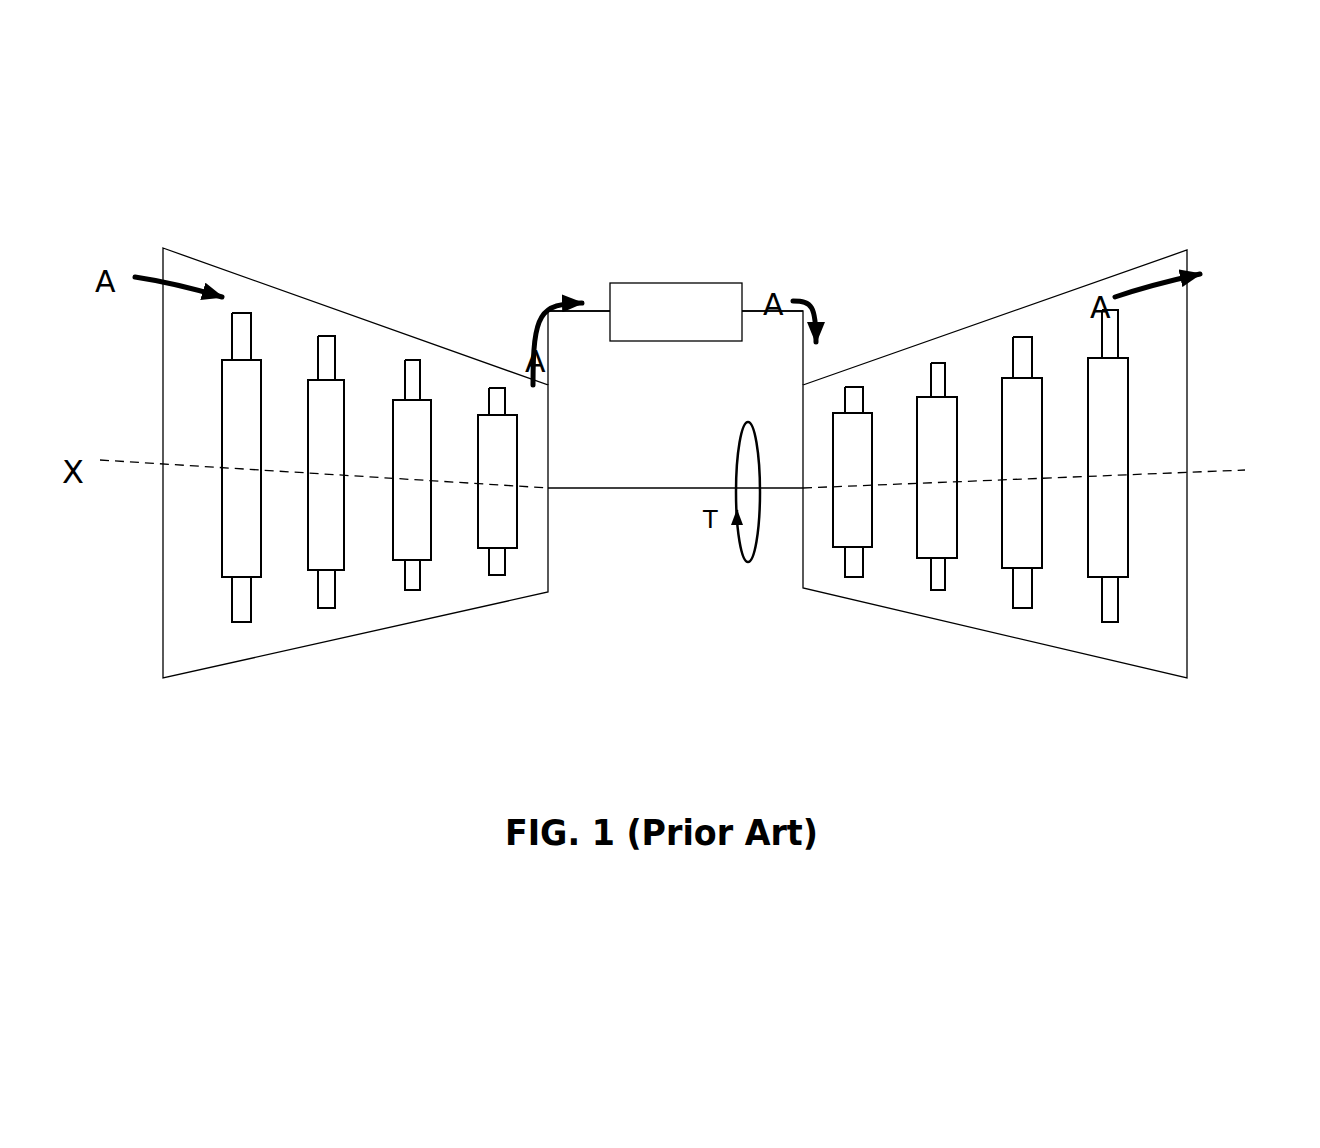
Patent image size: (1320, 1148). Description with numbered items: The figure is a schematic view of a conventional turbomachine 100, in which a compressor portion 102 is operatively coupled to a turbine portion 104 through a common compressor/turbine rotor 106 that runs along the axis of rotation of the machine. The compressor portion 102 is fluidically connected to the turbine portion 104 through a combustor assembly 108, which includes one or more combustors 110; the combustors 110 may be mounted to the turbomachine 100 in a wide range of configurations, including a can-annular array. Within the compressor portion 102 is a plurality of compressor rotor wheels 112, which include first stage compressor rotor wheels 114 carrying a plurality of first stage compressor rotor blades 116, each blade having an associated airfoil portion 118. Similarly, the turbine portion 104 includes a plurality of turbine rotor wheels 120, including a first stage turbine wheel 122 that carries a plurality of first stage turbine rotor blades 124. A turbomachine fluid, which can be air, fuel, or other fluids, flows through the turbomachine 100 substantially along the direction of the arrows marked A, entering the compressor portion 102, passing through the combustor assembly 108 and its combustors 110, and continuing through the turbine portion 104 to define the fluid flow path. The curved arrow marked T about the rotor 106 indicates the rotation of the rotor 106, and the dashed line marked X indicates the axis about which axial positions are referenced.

The turbomachine 100 is at (368, 210).
The compressor portion 102 is at (207, 677).
The turbine portion 104 is at (1090, 663).
The rotor 106 is at (612, 490).
The combustor assembly 108 is at (610, 252).
The combustor 110 is at (670, 283).
The compressor rotor wheels 112 is at (293, 630).
The first stage compressor rotor wheels 114 is at (230, 570).
The first stage compressor rotor blades 116 is at (224, 621).
The airfoil portion 118 is at (240, 613).
The turbine rotor wheels 120 is at (1132, 606).
The first stage turbine wheel 122 is at (867, 552).
The first stage turbine rotor blades 124 is at (853, 392).